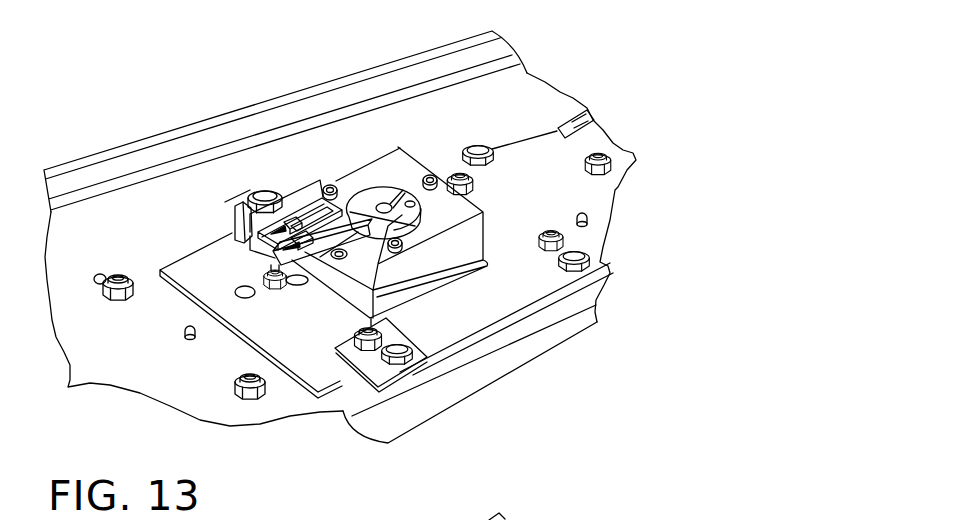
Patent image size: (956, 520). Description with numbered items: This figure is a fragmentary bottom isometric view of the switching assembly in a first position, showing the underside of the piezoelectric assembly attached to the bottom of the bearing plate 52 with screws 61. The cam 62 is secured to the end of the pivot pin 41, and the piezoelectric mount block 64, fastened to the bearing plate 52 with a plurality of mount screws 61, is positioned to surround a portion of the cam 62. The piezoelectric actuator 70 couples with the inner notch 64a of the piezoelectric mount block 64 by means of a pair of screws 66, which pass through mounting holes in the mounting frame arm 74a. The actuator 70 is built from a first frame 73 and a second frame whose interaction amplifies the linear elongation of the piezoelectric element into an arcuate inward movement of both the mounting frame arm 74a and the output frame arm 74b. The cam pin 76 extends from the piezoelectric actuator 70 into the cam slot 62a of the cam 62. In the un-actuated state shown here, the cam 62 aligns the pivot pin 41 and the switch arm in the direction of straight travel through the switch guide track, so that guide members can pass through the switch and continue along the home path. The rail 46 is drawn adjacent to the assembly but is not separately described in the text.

The pivot pin 41 is at (387, 200).
The rail 46 is at (117, 166).
The bearing plate 52 is at (451, 258).
The mount screws 61 is at (329, 184).
The cam 62 is at (376, 198).
The cam slot 62a is at (416, 205).
The piezoelectric mount block 64 is at (470, 236).
The inner notch 64a is at (240, 228).
The screws 66 is at (257, 190).
The piezoelectric actuator 70 is at (224, 252).
The first frame 73 is at (316, 205).
The mounting frame arm 74a is at (297, 203).
The output frame arm 74b is at (290, 265).
The cam pin 76 is at (360, 304).